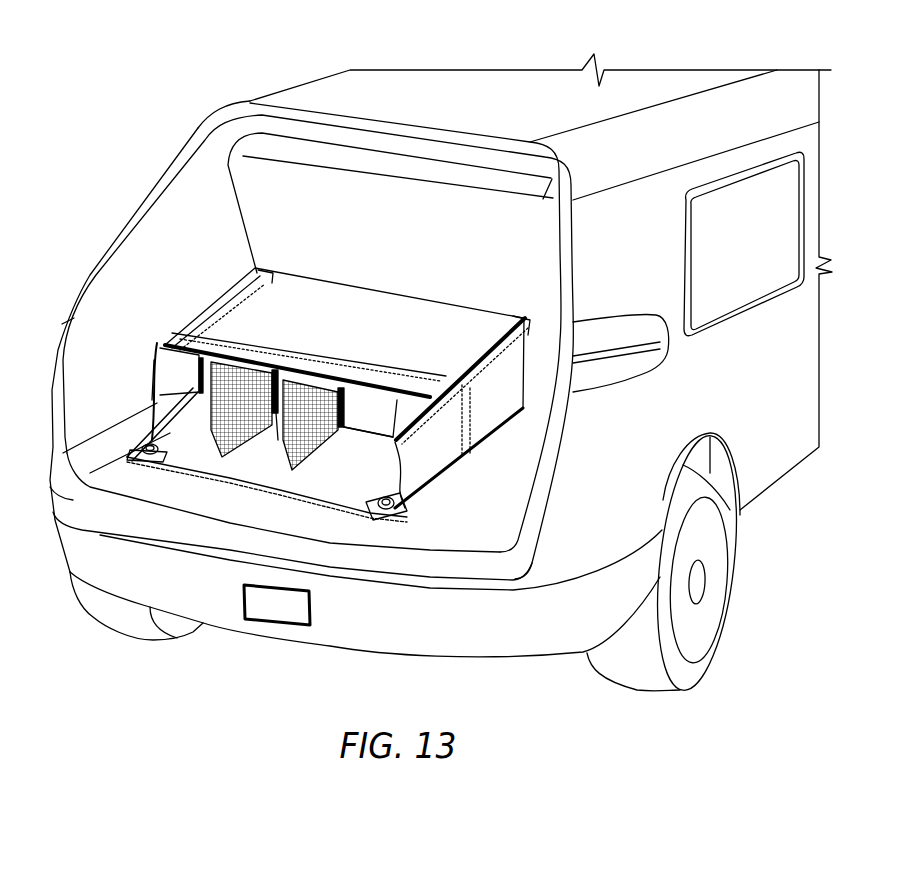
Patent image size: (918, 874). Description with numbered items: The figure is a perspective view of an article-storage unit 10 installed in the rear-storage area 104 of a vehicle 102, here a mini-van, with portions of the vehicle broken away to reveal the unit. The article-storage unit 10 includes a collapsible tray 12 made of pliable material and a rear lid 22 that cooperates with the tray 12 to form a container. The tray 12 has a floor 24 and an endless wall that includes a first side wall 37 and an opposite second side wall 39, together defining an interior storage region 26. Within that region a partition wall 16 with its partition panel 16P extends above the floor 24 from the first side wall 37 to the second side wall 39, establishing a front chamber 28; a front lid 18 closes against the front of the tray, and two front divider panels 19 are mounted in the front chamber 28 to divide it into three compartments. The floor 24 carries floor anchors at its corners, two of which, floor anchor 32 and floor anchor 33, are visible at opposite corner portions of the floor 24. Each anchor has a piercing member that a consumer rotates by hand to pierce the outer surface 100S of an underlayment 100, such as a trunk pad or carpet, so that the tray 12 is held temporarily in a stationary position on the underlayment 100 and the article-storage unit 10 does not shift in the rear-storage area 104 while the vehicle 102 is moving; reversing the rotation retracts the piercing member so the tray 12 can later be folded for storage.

The article-storage unit 10 is at (342, 422).
The tray 12 is at (484, 410).
The partition wall 16 is at (373, 401).
The partition panel 16P is at (353, 410).
The front lid 18 is at (175, 445).
The front divider panels 19 is at (257, 423).
The rear lid 22 is at (323, 309).
The floor 24 is at (364, 483).
The interior storage region 26 is at (392, 412).
The front chamber 28 is at (177, 367).
The floor anchor 32 is at (378, 520).
The floor anchor 33 is at (175, 455).
The first side wall 37 is at (427, 453).
The second side wall 39 is at (152, 378).
The underlayment 100 is at (494, 527).
The surface 100S is at (507, 483).
The vehicle 102 is at (517, 100).
The rear-storage area 104 is at (208, 172).